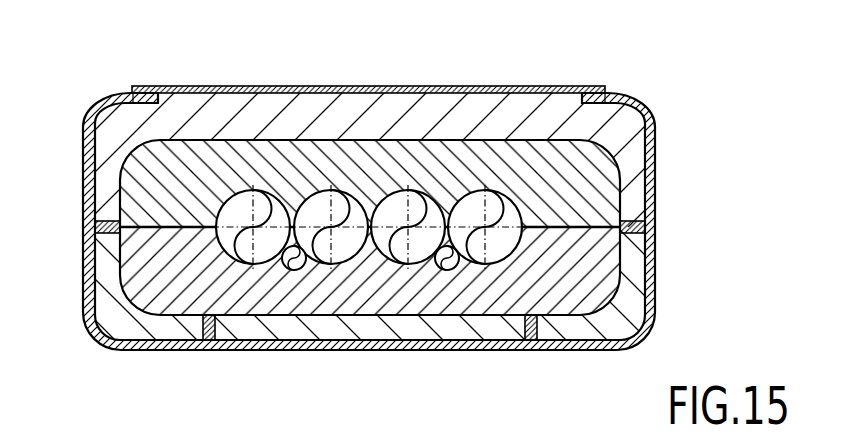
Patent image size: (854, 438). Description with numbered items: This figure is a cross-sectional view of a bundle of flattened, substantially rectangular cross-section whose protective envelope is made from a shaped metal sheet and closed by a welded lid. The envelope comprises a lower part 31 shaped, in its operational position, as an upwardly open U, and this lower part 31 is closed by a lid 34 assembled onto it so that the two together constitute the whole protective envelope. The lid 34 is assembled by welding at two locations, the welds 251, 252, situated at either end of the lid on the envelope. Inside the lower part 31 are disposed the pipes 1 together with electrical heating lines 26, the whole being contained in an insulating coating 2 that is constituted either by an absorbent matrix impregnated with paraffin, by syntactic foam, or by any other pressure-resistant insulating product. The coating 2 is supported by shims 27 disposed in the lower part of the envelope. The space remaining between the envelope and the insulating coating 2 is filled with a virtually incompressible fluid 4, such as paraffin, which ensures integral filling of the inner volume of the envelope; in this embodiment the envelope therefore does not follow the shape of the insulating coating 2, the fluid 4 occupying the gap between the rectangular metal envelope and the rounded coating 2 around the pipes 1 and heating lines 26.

The pipes 1 is at (493, 205).
The insulating coating 2 is at (583, 200).
The lower part 31 is at (652, 287).
The incompressible fluid 4 is at (633, 146).
The weld 251 is at (135, 90).
The weld 252 is at (622, 95).
The electrical heating lines 26 is at (288, 270).
The shims 27 is at (653, 224).
The lid 34 is at (501, 85).